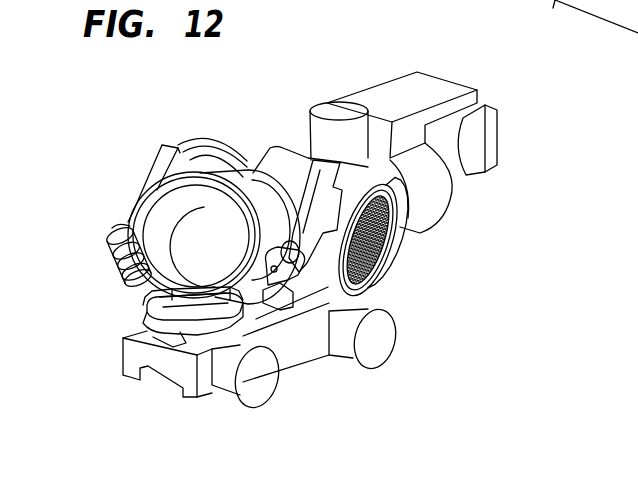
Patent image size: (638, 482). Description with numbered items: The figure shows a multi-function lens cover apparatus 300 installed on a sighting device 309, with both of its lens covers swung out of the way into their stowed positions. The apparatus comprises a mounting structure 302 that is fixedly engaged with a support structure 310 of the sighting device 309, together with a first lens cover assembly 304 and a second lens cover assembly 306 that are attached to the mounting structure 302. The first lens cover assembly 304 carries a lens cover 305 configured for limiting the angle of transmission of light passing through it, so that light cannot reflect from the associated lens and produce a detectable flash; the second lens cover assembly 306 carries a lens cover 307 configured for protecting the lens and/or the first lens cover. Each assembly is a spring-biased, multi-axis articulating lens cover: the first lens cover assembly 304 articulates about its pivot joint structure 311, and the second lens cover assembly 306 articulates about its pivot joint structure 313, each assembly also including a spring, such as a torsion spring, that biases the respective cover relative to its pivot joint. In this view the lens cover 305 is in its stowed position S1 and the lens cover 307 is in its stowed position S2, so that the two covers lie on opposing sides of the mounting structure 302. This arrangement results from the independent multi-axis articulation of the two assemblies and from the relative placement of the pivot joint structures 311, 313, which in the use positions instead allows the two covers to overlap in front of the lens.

The multi-function lens cover apparatus 300 is at (160, 145).
The mounting structure 302 is at (170, 322).
The first lens cover assembly 304 is at (342, 220).
The lens cover 305 is at (353, 192).
The second lens cover assembly 306 is at (148, 187).
The lens cover 307 is at (157, 180).
The sighting device 309 is at (458, 77).
The support structure 310 is at (182, 322).
The pivot joint structure 311 is at (299, 272).
The pivot joint structure 313 is at (110, 258).
The stowed position S1 is at (387, 262).
The stowed position S2 is at (192, 137).